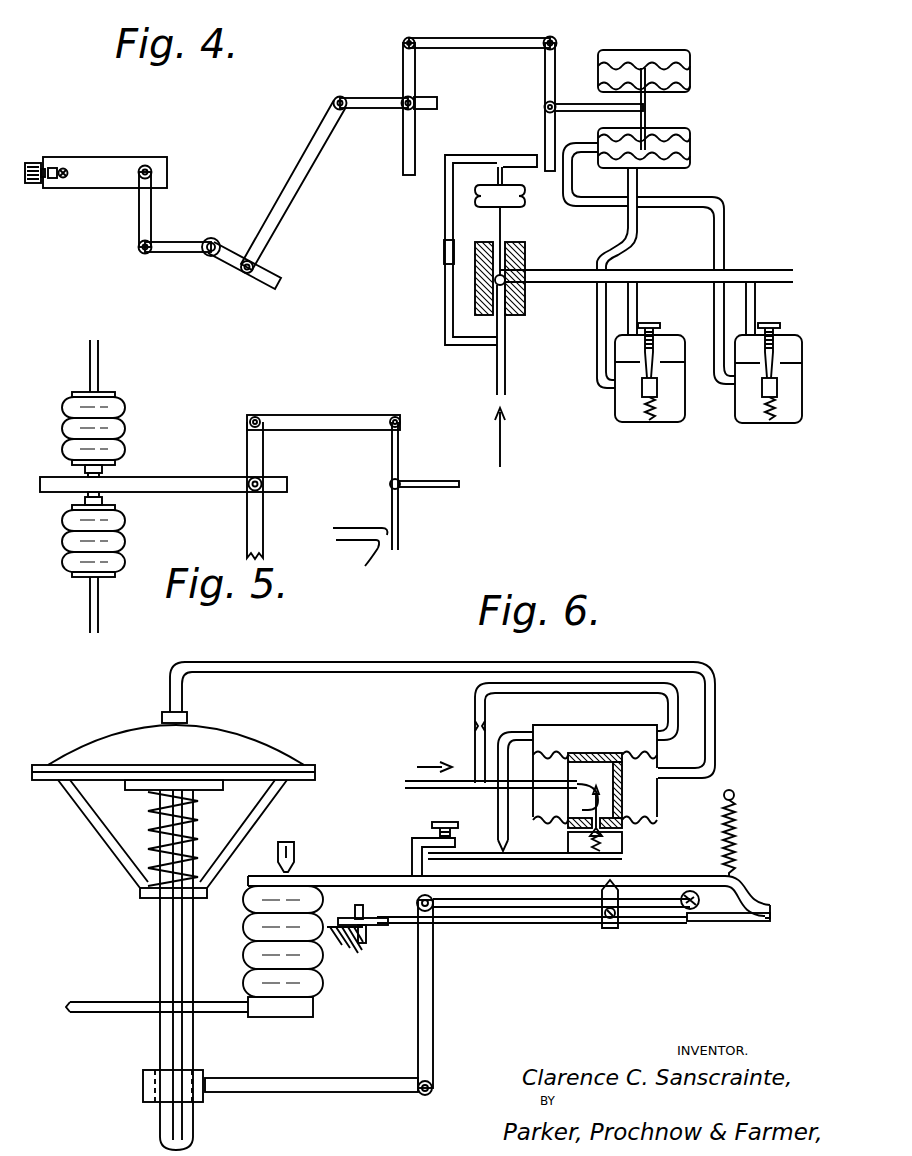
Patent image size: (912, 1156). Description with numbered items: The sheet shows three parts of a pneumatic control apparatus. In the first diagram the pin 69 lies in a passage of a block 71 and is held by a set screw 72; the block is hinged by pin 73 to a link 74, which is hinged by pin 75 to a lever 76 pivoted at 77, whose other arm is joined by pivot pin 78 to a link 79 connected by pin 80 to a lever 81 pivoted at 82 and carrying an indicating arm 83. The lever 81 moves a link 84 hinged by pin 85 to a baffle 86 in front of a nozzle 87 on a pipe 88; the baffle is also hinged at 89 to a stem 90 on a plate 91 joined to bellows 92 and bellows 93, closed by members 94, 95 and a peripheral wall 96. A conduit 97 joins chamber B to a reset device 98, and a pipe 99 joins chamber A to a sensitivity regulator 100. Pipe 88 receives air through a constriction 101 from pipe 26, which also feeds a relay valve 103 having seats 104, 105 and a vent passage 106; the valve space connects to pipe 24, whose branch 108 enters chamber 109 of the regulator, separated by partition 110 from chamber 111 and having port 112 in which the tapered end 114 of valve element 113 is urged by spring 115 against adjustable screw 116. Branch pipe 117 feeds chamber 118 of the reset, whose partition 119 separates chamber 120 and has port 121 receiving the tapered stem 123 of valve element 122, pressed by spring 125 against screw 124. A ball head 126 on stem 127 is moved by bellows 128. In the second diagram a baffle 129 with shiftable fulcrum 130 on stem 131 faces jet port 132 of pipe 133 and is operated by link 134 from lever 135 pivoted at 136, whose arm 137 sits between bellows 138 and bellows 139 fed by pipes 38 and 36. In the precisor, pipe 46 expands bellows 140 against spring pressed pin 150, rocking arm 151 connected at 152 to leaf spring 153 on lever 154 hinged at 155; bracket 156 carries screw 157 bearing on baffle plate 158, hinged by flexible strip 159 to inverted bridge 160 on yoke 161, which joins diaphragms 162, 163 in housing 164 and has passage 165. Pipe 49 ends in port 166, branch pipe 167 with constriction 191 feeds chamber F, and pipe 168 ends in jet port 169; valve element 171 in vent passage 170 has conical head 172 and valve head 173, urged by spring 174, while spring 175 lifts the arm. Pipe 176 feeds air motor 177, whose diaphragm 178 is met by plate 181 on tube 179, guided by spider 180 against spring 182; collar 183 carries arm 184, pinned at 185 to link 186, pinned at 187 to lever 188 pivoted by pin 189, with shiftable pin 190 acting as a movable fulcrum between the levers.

In FIG. 4, the pipe 24 is at (772, 272).
In FIG. 4, the pipe 26 is at (494, 383).
In FIG. 4, the pin 69 is at (66, 170).
In FIG. 4, the block 71 is at (92, 188).
In FIG. 4, the set screw 72 is at (35, 162).
In FIG. 4, the pin 73 is at (152, 173).
In FIG. 4, the link 74 is at (152, 209).
In FIG. 4, the pin 75 is at (139, 250).
In FIG. 4, the lever 76 is at (178, 253).
In FIG. 4, the pivot 77 is at (214, 257).
In FIG. 4, the pivot pin 78 is at (247, 260).
In FIG. 4, the link 79 is at (290, 210).
In FIG. 4, the pin 80 is at (333, 103).
In FIG. 4, the lever 81 is at (366, 110).
In FIG. 4, the pivot 82 is at (404, 98).
In FIG. 4, the indicating arm 83 is at (403, 172).
In FIG. 4, the link 84 is at (445, 47).
In FIG. 4, the hinge pin 85 is at (545, 40).
In FIG. 4, the baffle 86 is at (545, 75).
In FIG. 4, the nozzle 87 is at (535, 156).
In FIG. 4, the pipe 88 is at (473, 155).
In FIG. 4, the hinge 89 is at (545, 108).
In FIG. 4, the stem 90 is at (632, 118).
In FIG. 4, the plate 91 is at (636, 110).
In FIG. 4, the bellows 92 is at (665, 70).
In FIG. 4, the bellows 93 is at (690, 135).
In FIG. 4, the member 94 is at (598, 67).
In FIG. 4, the member 95 is at (693, 153).
In FIG. 4, the peripheral wall 96 is at (663, 172).
In FIG. 4, the conduit 97 is at (668, 208).
In FIG. 4, the reset device 98 is at (742, 438).
In FIG. 4, the pipe 99 is at (630, 250).
In FIG. 4, the sensitivity regulator 100 is at (611, 437).
In FIG. 4, the constriction 101 is at (444, 252).
In FIG. 4, the relay valve 103 is at (512, 318).
In FIG. 4, the seat 104 is at (508, 290).
In FIG. 4, the seat 105 is at (523, 262).
In FIG. 4, the vent passage 106 is at (443, 272).
In FIG. 4, the branch 108 is at (631, 290).
In FIG. 4, the chamber 109 is at (670, 345).
In FIG. 4, the partition 110 is at (640, 362).
In FIG. 4, the chamber 111 is at (632, 423).
In FIG. 4, the port 112 is at (646, 376).
In FIG. 4, the valve element 113 is at (648, 402).
In FIG. 4, the tapered end 114 is at (642, 386).
In FIG. 4, the compression spring 115 is at (646, 421).
In FIG. 4, the adjustable screw 116 is at (670, 310).
In FIG. 4, the branch pipe 117 is at (752, 283).
In FIG. 4, the chamber 118 is at (797, 340).
In FIG. 4, the partition 119 is at (735, 380).
In FIG. 4, the chamber 120 is at (758, 415).
In FIG. 4, the port 121 is at (764, 398).
In FIG. 4, the valve element 122 is at (765, 402).
In FIG. 4, the tapered stem 123 is at (772, 413).
In FIG. 4, the adjustable screw 124 is at (770, 322).
In FIG. 4, the compression spring 125 is at (800, 423).
In FIG. 4, the ball head 126 is at (480, 284).
In FIG. 4, the stem 127 is at (445, 233).
In FIG. 4, the bellows 128 is at (475, 198).
In FIG. 5, the pipe 36 is at (100, 615).
In FIG. 5, the pipe 38 is at (100, 350).
In FIG. 5, the baffle 129 is at (391, 468).
In FIG. 5, the shiftable fulcrum 130 is at (405, 487).
In FIG. 5, the stem 131 is at (455, 473).
In FIG. 5, the jet port 132 is at (366, 566).
In FIG. 5, the pipe 133 is at (360, 520).
In FIG. 5, the link 134 is at (345, 400).
In FIG. 5, the lever 135 is at (264, 447).
In FIG. 5, the pivot 136 is at (249, 489).
In FIG. 5, the arm 137 is at (205, 470).
In FIG. 5, the bellows 138 is at (125, 406).
In FIG. 5, the bellows 139 is at (122, 525).
In FIG. 6, the pipe 46 is at (105, 990).
In FIG. 6, the pipe 49 is at (405, 785).
In FIG. 6, the bellows 140 is at (246, 968).
In FIG. 6, the spring pressed pin 150 is at (305, 819).
In FIG. 6, the arm 151 is at (330, 862).
In FIG. 6, the connection 152 is at (763, 922).
In FIG. 6, the leaf spring 153 is at (737, 928).
In FIG. 6, the lever 154 is at (683, 925).
In FIG. 6, the frictionless hinge 155 is at (359, 945).
In FIG. 6, the bracket 156 is at (412, 842).
In FIG. 6, the screw 157 is at (446, 822).
In FIG. 6, the baffle plate 158 is at (463, 862).
In FIG. 6, the flexible strip 159 is at (567, 862).
In FIG. 6, the inverted bridge 160 is at (626, 848).
In FIG. 6, the yoke 161 is at (624, 766).
In FIG. 6, the diaphragm 162 is at (553, 748).
In FIG. 6, the diaphragm 163 is at (623, 812).
In FIG. 6, the housing 164 is at (658, 726).
In FIG. 6, the passage 165 is at (624, 778).
In FIG. 6, the port 166 is at (622, 795).
In FIG. 6, the branch pipe 167 is at (483, 688).
In FIG. 6, the pipe 168 is at (522, 724).
In FIG. 6, the jet port 169 is at (500, 845).
In FIG. 6, the vent passage 170 is at (626, 838).
In FIG. 6, the valve element 171 is at (581, 790).
In FIG. 6, the conical head 172 is at (597, 786).
In FIG. 6, the valve head 173 is at (576, 828).
In FIG. 6, the spring 174 is at (612, 859).
In FIG. 6, the spring 175 is at (740, 856).
In FIG. 6, the pipe 176 is at (697, 663).
In FIG. 6, the air motor 177 is at (133, 723).
In FIG. 6, the diaphragm 178 is at (72, 768).
In FIG. 6, the tube 179 is at (158, 935).
In FIG. 6, the spider 180 is at (123, 872).
In FIG. 6, the plate 181 is at (127, 787).
In FIG. 6, the spring 182 is at (147, 827).
In FIG. 6, the collar 183 is at (165, 1083).
In FIG. 6, the arm 184 is at (290, 1093).
In FIG. 6, the pin 185 is at (425, 1096).
In FIG. 6, the link 186 is at (418, 1052).
In FIG. 6, the pin 187 is at (417, 903).
In FIG. 6, the lever 188 is at (493, 905).
In FIG. 6, the pin 189 is at (695, 910).
In FIG. 6, the shiftable pin 190 is at (607, 930).
In FIG. 6, the constriction 191 is at (474, 725).